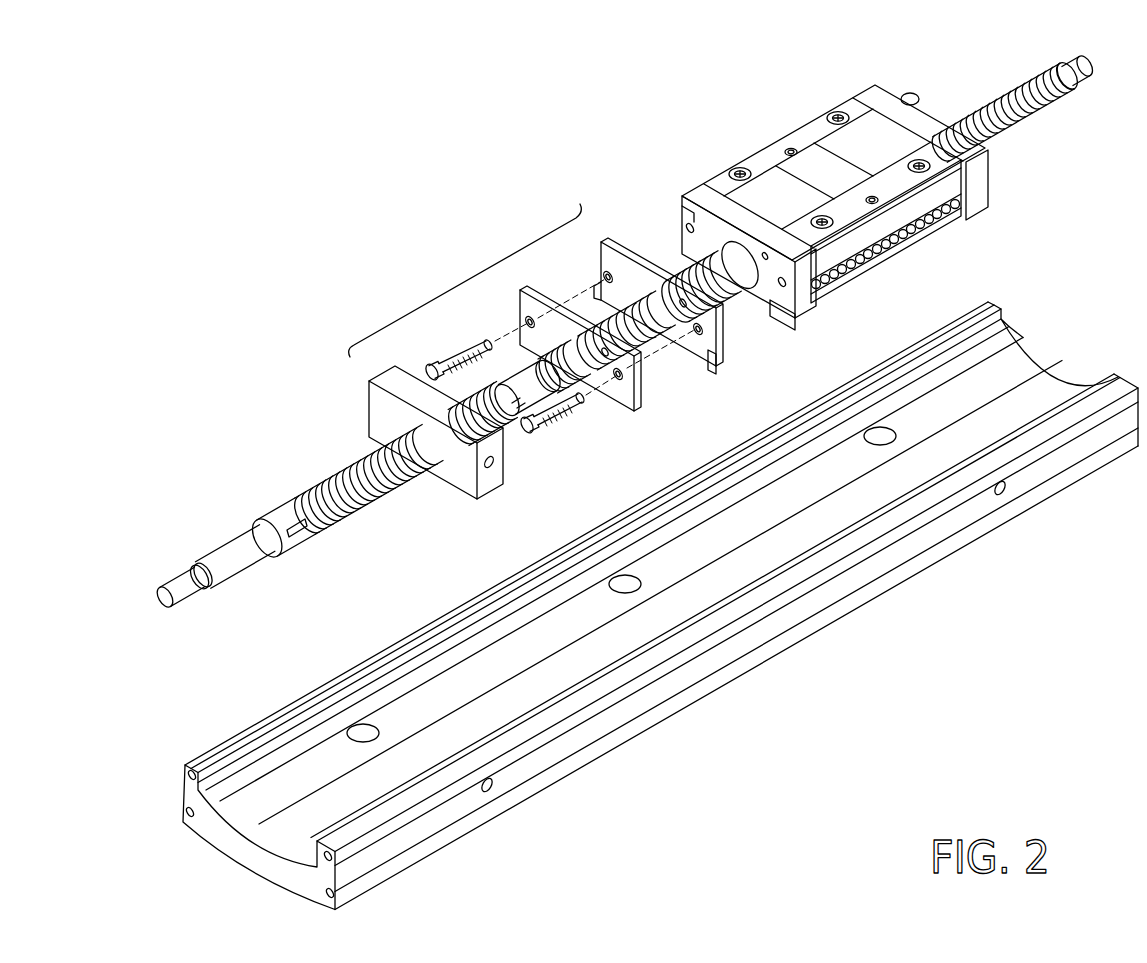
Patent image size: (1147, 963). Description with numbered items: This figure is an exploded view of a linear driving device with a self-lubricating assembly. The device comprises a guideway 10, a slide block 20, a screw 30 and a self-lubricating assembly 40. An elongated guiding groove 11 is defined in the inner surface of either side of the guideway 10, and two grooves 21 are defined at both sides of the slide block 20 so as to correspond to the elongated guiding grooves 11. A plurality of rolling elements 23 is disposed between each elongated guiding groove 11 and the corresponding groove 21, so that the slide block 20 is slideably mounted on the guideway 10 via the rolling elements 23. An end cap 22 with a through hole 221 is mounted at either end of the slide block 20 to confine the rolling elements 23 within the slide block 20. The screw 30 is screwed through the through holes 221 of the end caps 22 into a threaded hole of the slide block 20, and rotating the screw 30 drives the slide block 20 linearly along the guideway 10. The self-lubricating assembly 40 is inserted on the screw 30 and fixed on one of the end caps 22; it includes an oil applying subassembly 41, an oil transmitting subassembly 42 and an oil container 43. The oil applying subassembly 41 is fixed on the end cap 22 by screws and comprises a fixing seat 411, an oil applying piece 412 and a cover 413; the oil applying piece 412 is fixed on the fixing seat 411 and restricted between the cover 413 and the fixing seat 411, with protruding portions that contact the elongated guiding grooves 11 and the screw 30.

The guideway 10 is at (660, 588).
The elongated guiding groove 11 is at (1002, 327).
The slide block 20 is at (814, 228).
The groove 21 is at (844, 279).
The end cap 22 is at (728, 262).
The through hole 221 is at (746, 286).
The rolling element 23 is at (914, 236).
The screw 30 is at (1002, 92).
The self-lubricating assembly 40 is at (466, 287).
The oil applying subassembly 41 is at (624, 318).
The fixing seat 411 is at (616, 238).
The oil applying piece 412 is at (627, 276).
The cover 413 is at (610, 394).
The oil transmitting subassembly 42 is at (546, 413).
The oil container 43 is at (453, 462).